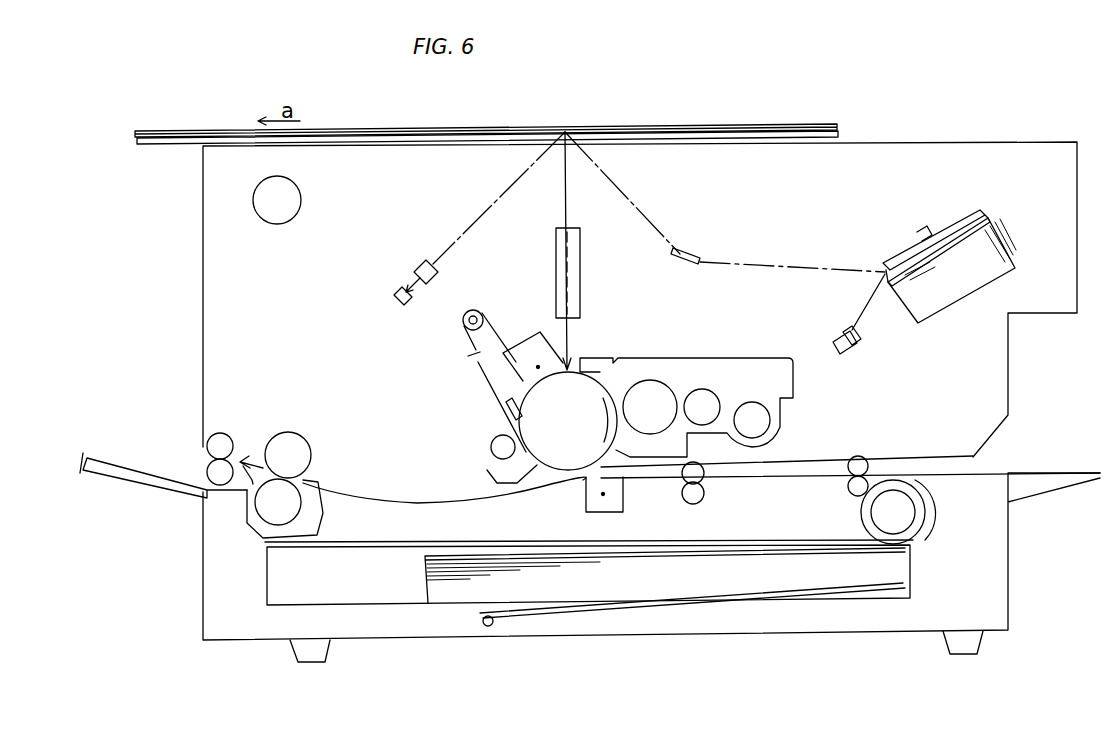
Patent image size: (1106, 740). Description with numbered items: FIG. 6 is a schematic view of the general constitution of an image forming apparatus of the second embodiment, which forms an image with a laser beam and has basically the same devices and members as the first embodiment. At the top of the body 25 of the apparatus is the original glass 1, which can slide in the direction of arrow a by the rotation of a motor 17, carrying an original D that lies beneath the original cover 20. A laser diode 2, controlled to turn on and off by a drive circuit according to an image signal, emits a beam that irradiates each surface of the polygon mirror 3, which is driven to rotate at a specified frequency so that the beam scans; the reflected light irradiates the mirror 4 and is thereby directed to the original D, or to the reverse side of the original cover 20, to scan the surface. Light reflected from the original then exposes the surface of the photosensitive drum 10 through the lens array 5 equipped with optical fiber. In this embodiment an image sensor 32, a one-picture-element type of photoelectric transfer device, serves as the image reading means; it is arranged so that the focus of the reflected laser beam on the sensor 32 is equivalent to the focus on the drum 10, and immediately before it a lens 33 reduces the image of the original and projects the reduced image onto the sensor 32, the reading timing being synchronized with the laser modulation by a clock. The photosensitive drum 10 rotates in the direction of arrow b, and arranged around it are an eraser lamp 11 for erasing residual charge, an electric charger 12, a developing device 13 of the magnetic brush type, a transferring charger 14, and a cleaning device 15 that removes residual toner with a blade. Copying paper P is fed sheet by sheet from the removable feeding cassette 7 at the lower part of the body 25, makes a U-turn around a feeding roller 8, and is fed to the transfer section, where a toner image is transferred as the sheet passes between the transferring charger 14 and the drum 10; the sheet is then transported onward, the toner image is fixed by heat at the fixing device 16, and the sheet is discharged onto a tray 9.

The original glass 1 is at (430, 147).
The laser diode 2 is at (857, 347).
The polygon mirror 3 is at (885, 266).
The mirror 4 is at (691, 266).
The lens array 5 is at (556, 255).
The feeding cassette 7 is at (388, 606).
The feeding roller 8 is at (861, 508).
The tray 9 is at (121, 468).
The photosensitive drum 10 is at (612, 392).
The eraser lamp 11 is at (470, 318).
The electric charger 12 is at (531, 343).
The developing device 13 is at (708, 356).
The transferring charger 14 is at (624, 512).
The cleaning device 15 is at (488, 418).
The fixing device 16 is at (307, 438).
The motor 17 is at (272, 215).
The original cover 20 is at (820, 126).
The body 25 is at (203, 228).
The image sensor 32 is at (395, 292).
The lens 33 is at (420, 263).
The original D is at (684, 126).
The copying paper P is at (528, 556).